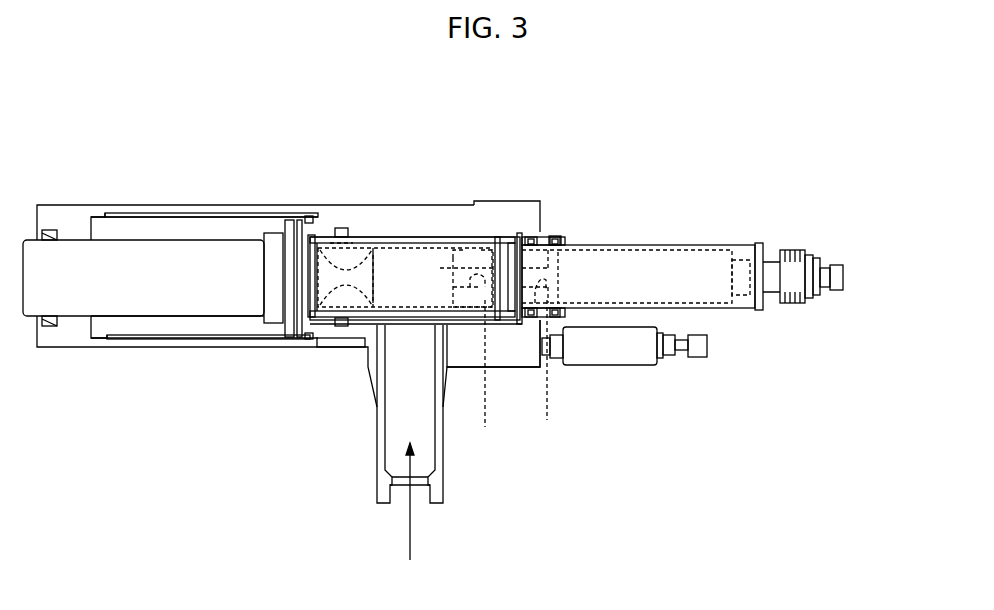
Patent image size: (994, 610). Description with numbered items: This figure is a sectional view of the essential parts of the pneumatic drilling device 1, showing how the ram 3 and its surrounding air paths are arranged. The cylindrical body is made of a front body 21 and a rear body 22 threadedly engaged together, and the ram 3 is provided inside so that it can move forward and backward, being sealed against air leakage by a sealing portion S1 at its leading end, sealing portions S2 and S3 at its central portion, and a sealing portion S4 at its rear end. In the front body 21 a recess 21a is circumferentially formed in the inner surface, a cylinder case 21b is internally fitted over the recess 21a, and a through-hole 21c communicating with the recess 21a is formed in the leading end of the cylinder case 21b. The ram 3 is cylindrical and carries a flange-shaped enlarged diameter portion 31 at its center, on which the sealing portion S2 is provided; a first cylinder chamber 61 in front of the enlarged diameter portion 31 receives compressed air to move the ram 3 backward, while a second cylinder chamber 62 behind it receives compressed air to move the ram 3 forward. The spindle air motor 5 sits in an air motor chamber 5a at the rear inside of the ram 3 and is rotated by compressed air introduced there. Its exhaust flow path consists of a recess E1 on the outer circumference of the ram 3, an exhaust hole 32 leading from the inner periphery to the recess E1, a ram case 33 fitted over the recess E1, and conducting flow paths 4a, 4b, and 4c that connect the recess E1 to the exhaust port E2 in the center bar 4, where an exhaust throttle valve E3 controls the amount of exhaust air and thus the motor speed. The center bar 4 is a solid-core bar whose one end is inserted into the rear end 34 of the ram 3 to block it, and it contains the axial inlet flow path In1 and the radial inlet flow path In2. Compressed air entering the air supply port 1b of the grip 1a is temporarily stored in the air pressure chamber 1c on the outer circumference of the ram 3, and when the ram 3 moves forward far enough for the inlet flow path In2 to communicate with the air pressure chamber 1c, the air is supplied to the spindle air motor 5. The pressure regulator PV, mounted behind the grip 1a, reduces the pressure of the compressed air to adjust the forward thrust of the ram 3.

The pneumatic drilling device 1 is at (620, 162).
The front body 21 is at (212, 205).
The rear body 22 is at (480, 203).
The recess 21a is at (229, 222).
The cylinder case 21b is at (173, 217).
The through-hole 21c is at (103, 213).
The ram 3 is at (130, 240).
The enlarged diameter portion 31 is at (267, 233).
The exhaust hole 32 is at (323, 237).
The ram case 33 is at (450, 240).
The rear end 34 is at (528, 327).
The recess E1 is at (405, 250).
The exhaust port E2 is at (793, 250).
The exhaust throttle valve E3 is at (838, 265).
The center bar 4 is at (732, 245).
The conducting flow path 4a is at (500, 245).
The conducting flow path 4b is at (557, 265).
The conducting flow path 4c is at (677, 258).
The spindle air motor 5 is at (342, 297).
The air motor chamber 5a is at (405, 297).
The first cylinder chamber 61 is at (170, 325).
The second cylinder chamber 62 is at (313, 333).
The sealing portion S1 is at (48, 228).
The sealing portion S2 is at (306, 220).
The sealing portion S3 is at (340, 228).
The sealing portion S4 is at (555, 237).
The inlet flow path In1 is at (501, 377).
The inlet flow path In2 is at (552, 370).
The pressure regulator PV is at (620, 367).
The grip 1a is at (445, 455).
The air supply port 1b is at (425, 497).
The air pressure chamber 1c is at (467, 330).